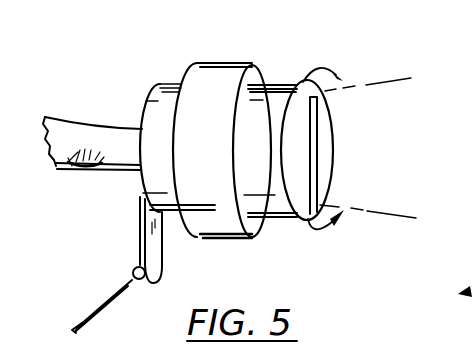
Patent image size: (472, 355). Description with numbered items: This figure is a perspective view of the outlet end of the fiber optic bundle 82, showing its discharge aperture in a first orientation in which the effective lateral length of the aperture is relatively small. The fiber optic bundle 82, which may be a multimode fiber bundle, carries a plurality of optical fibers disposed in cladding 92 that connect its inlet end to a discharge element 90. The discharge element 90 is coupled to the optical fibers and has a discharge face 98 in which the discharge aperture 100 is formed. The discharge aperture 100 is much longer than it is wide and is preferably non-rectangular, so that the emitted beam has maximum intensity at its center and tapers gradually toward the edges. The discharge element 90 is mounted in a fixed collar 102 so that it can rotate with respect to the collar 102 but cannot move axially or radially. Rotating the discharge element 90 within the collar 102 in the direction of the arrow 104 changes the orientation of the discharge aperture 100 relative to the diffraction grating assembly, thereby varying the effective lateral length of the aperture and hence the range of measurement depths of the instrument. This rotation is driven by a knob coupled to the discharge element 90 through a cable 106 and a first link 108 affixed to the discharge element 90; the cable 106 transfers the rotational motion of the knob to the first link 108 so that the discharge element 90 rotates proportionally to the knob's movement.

The fiber optic bundle 82 is at (75, 118).
The discharge element 90 is at (274, 87).
The cladding 92 is at (74, 164).
The discharge face 98 is at (324, 143).
The discharge aperture 100 is at (320, 102).
The collar 102 is at (210, 65).
The arrow 104 is at (314, 229).
The cable 106 is at (110, 295).
The first link 108 is at (140, 229).